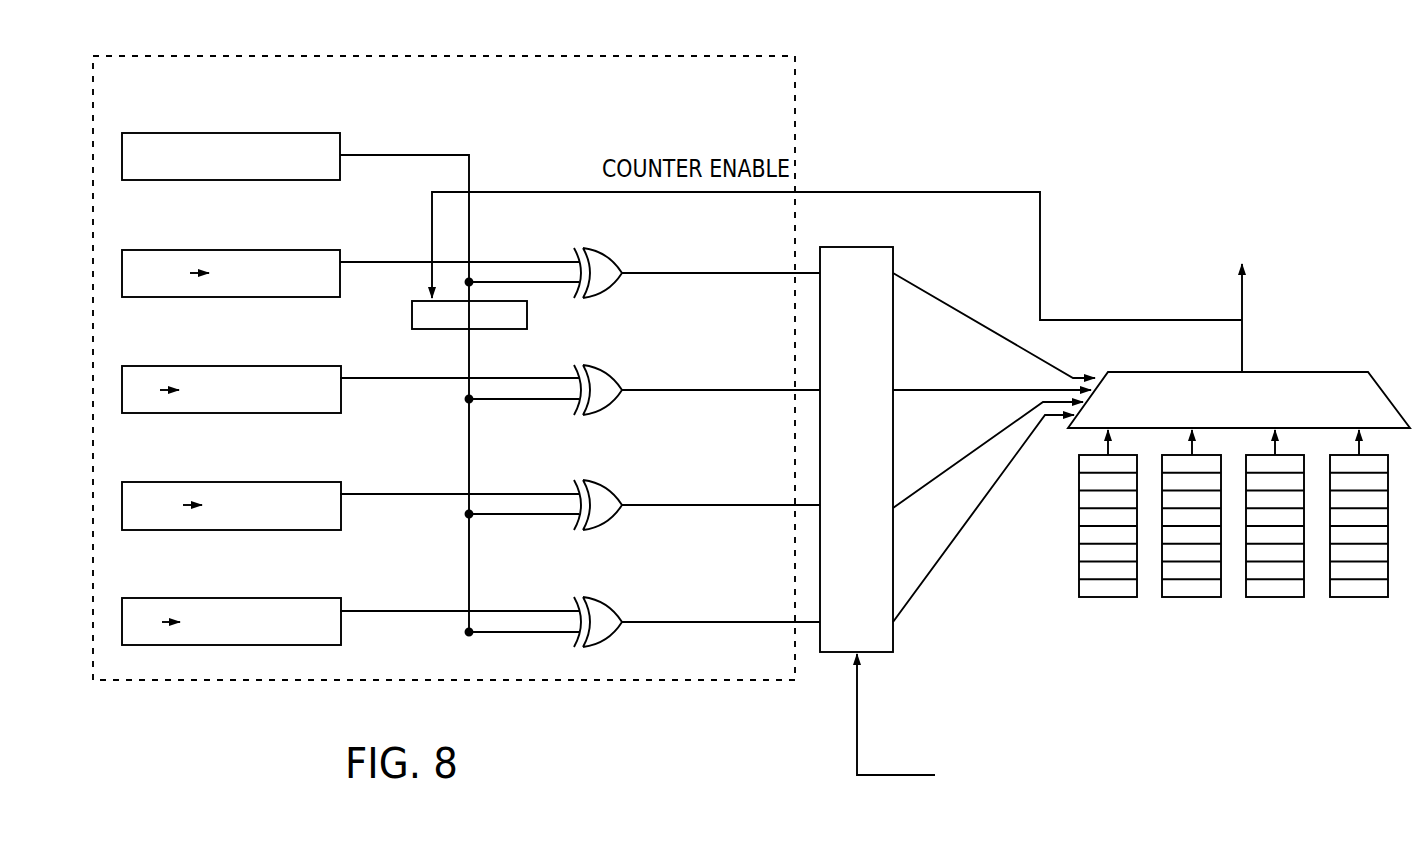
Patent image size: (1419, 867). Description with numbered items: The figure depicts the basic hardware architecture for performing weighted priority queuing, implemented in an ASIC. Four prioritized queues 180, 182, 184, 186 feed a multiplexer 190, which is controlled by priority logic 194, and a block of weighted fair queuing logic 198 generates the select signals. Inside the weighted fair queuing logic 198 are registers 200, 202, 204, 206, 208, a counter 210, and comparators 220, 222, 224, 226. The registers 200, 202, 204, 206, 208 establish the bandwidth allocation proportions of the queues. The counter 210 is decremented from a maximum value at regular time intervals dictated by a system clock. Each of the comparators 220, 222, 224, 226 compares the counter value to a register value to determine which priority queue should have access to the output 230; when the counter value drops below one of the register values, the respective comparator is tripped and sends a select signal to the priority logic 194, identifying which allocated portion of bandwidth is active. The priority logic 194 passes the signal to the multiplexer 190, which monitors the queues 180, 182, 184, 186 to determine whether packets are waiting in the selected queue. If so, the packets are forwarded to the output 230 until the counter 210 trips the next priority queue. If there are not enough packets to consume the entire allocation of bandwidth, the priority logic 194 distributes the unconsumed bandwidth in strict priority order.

The weighted fair queuing logic 198 is at (795, 100).
The register 200 is at (262, 132).
The register 202 is at (262, 249).
The register 204 is at (262, 365).
The register 206 is at (262, 481).
The register 208 is at (262, 597).
The counter 210 is at (508, 329).
The comparator 220 is at (598, 248).
The comparator 222 is at (697, 366).
The comparator 224 is at (697, 481).
The comparator 226 is at (697, 607).
The priority logic 194 is at (883, 652).
The multiplexer 190 is at (1239, 400).
The output 230 is at (1307, 318).
The prioritized queue 180 is at (1108, 553).
The prioritized queue 182 is at (1192, 553).
The prioritized queue 184 is at (1275, 553).
The prioritized queue 186 is at (1359, 553).